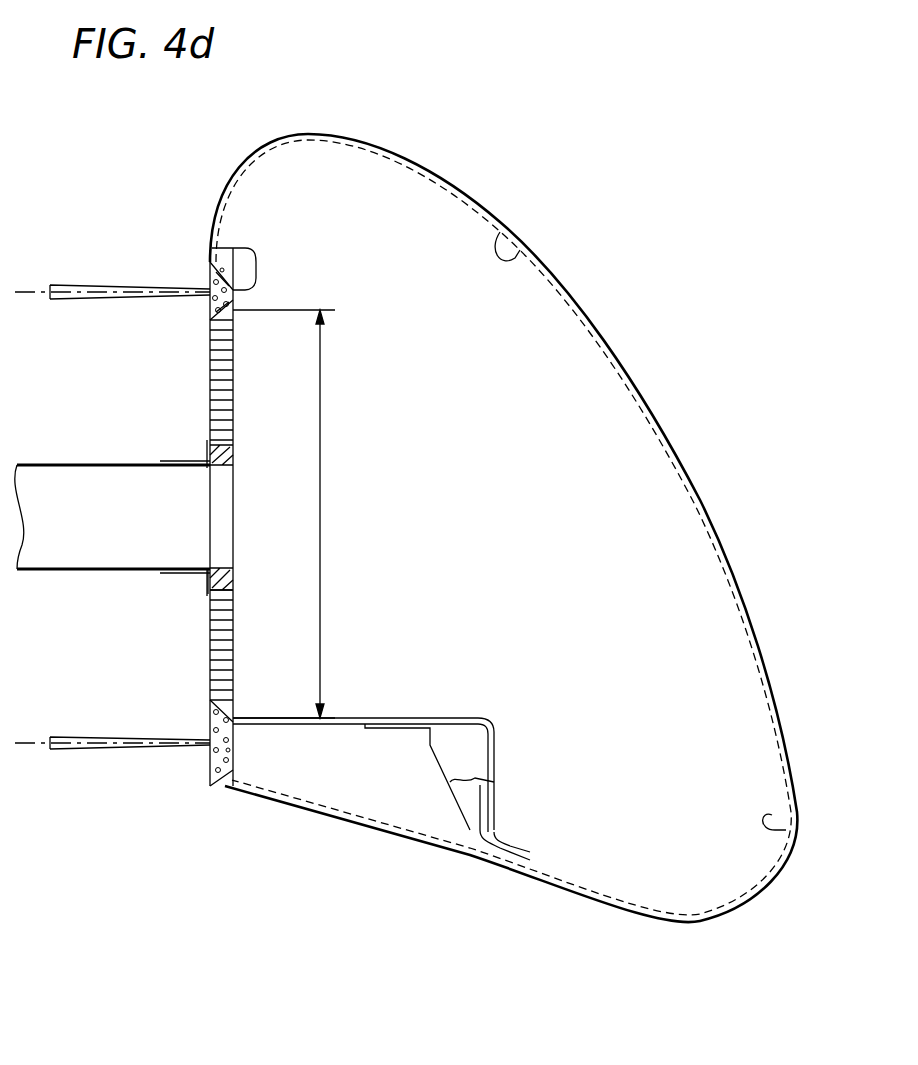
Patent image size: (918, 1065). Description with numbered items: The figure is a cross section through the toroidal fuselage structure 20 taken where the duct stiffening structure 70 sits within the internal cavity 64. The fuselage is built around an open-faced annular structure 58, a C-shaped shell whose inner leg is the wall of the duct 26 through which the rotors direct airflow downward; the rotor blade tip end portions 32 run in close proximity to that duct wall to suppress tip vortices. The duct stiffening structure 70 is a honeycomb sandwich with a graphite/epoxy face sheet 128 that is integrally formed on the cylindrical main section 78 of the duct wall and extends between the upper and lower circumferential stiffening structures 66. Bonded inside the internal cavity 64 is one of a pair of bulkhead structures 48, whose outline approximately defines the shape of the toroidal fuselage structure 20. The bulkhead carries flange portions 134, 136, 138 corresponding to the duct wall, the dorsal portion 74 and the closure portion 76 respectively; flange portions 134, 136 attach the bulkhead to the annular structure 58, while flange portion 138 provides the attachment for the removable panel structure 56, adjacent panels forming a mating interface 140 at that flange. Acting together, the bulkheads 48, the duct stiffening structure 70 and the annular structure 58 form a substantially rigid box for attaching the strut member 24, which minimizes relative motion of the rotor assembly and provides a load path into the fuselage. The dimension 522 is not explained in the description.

The toroidal fuselage structure 20 is at (536, 145).
The strut member 24 is at (120, 464).
The duct 26 is at (131, 264).
The tip end portions 32 is at (168, 413).
The bulkhead structures 48 is at (720, 668).
The removable panel structure 56 is at (665, 430).
The open-faced annular structure 58 is at (405, 160).
The internal cavity 64 is at (553, 614).
The circumferential stiffening structures 66 is at (208, 278).
The duct stiffening structure 70 is at (235, 395).
The dorsal portion 74 is at (337, 815).
The closure portion 76 is at (716, 493).
The cylindrical main section 78 is at (136, 617).
The face sheet 128 is at (237, 602).
The flange portion 134 is at (305, 146).
The flange portion 136 is at (732, 912).
The flange portion 138 is at (768, 712).
The mating interface 140 is at (404, 718).
The height dimension 522 is at (289, 514).